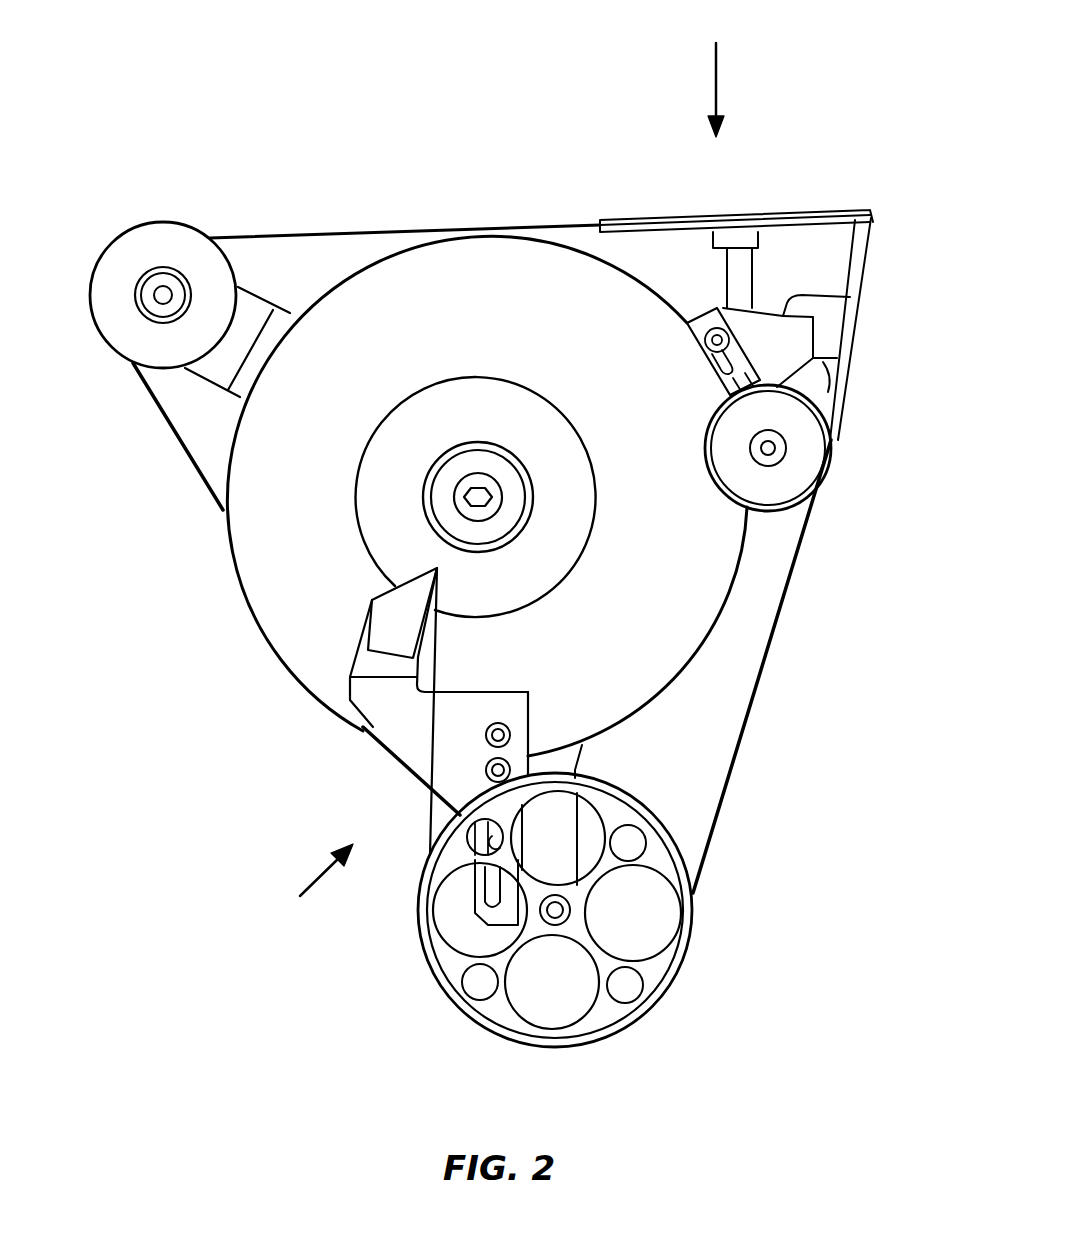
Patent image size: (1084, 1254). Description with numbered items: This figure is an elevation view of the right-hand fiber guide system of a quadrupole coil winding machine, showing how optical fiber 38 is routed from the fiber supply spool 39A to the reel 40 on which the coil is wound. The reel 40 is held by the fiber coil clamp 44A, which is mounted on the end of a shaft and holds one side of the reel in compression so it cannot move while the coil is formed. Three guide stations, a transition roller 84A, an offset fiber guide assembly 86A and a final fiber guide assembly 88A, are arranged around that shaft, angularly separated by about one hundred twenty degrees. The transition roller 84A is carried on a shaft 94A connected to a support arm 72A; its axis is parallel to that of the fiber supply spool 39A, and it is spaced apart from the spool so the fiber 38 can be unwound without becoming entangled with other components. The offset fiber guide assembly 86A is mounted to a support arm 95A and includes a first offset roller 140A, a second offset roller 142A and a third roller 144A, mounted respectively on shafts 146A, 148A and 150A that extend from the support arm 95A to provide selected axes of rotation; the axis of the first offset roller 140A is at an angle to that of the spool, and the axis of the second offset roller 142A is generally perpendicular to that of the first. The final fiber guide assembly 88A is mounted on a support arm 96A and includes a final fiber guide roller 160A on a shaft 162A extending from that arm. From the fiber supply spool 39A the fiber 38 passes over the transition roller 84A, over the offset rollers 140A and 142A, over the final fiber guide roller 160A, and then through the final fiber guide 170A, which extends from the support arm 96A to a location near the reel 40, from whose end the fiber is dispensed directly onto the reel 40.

The optical fiber 38 is at (752, 740).
The fiber supply spool 39A is at (237, 577).
The reel 40 is at (512, 378).
The fiber coil clamp 44A is at (533, 498).
The support arm 72A is at (260, 293).
The transition roller 84A is at (163, 222).
The offset fiber guide assembly 86A is at (722, 75).
The final fiber guide assembly 88A is at (303, 885).
The shaft 94A is at (160, 295).
The support arm 95A is at (800, 297).
The support arm 96A is at (582, 817).
The first offset roller 140A is at (623, 217).
The second offset roller 142A is at (872, 257).
The roller 144A is at (832, 458).
The shaft 146A is at (755, 275).
The shaft 148A is at (837, 392).
The shaft 150A is at (786, 455).
The final fiber guide roller 160A is at (690, 945).
The shaft 162A is at (570, 913).
The final fiber guide 170A is at (413, 580).